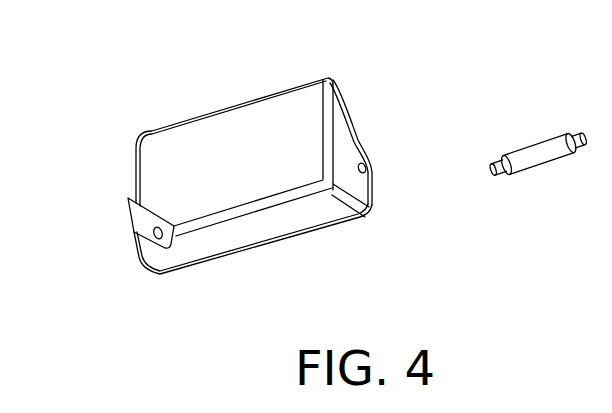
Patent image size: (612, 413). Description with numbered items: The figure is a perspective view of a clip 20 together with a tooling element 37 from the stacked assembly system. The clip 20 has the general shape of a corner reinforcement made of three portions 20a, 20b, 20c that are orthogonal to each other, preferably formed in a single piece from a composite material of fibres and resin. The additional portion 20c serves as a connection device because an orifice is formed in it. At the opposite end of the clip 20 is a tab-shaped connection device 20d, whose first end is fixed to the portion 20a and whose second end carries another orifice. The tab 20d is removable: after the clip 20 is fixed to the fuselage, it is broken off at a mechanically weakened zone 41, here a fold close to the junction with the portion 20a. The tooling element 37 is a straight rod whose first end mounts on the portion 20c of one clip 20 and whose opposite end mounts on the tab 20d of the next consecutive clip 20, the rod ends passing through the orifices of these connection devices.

The clip 20 is at (227, 98).
The portion of the clip 20a is at (198, 147).
The portion of the clip 20b is at (266, 228).
The additional portion 20c is at (377, 191).
The tab-shaped connection device 20d is at (138, 218).
The mechanically weakened zone 41 is at (137, 199).
The tooling element 37 is at (538, 137).